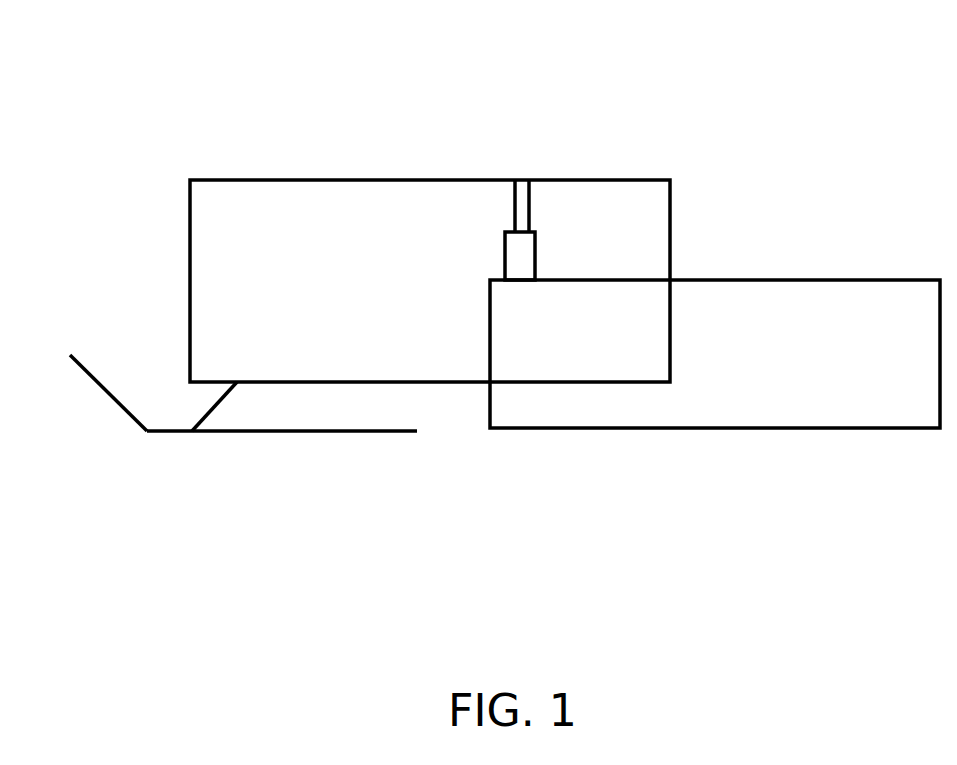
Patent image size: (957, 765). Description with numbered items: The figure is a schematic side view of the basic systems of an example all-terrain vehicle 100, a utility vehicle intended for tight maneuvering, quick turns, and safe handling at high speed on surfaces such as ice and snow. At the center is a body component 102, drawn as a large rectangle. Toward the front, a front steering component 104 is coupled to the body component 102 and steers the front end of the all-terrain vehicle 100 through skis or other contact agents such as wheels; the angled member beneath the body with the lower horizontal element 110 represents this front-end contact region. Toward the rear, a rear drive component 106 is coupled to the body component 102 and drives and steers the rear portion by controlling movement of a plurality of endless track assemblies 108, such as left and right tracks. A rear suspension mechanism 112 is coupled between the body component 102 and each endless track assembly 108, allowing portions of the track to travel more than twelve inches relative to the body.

The all-terrain vehicle 100 is at (146, 38).
The body component 102 is at (430, 250).
The front steering component 104 is at (102, 368).
The rear drive component 106 is at (715, 306).
The endless track assembly 108 is at (715, 328).
The base support 110 is at (282, 436).
The rear suspension mechanism 112 is at (571, 214).